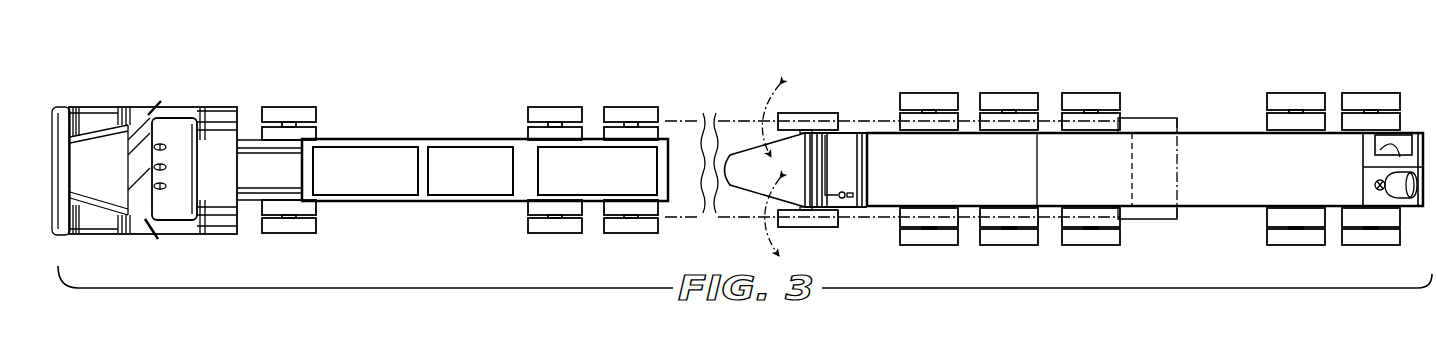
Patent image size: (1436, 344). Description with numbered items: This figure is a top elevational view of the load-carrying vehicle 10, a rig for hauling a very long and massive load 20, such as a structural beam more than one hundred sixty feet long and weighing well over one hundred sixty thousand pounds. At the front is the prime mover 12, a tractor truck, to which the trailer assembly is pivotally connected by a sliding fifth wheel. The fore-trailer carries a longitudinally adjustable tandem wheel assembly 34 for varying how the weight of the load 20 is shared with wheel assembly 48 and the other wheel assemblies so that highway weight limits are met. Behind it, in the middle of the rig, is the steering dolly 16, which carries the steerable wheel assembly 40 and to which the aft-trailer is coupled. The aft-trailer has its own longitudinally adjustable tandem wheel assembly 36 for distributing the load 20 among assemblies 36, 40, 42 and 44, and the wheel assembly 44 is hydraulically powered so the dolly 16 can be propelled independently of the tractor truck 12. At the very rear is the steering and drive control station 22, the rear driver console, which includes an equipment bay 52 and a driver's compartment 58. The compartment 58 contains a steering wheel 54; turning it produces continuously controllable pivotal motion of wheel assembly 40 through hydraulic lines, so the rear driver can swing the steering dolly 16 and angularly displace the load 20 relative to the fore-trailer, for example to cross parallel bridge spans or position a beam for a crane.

The load-carrying vehicle 10 is at (432, 97).
The prime mover 12 is at (182, 106).
The steering dolly 16 is at (886, 146).
The load 20 is at (702, 111).
The steering and drive control station 22 is at (1422, 127).
The longitudinally adjustable tandem wheel assembly 34 is at (596, 241).
The longitudinally adjustable tandem wheel assembly 36 is at (1336, 250).
The steerable wheel assembly 40 is at (821, 241).
The wheel assembly 42 is at (1024, 251).
The wheel assembly 44 is at (929, 251).
The wheel assembly 48 is at (328, 240).
The equipment bay 52 is at (1380, 143).
The steering wheel 54 is at (1376, 185).
The driver's compartment 58 is at (1418, 212).